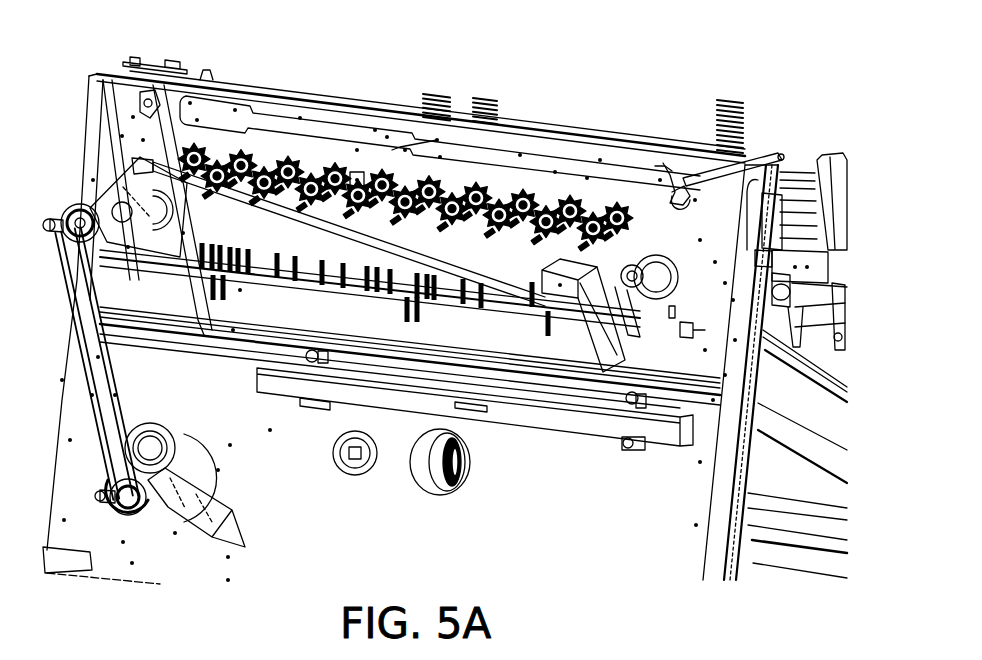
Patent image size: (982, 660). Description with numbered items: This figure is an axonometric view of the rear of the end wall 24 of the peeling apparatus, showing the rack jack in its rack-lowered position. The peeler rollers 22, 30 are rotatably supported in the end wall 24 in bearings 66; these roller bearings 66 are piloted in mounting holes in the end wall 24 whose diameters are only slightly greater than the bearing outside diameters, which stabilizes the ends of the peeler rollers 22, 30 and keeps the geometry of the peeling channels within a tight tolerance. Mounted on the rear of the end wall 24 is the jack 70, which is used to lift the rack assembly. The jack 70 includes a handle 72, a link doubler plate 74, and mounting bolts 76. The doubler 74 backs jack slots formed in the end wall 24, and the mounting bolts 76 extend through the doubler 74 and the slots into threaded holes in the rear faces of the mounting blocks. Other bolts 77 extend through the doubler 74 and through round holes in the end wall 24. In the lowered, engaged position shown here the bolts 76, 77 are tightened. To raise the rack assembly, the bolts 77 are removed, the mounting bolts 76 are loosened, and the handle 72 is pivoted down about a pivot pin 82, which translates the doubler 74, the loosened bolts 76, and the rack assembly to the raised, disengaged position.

The peeler roller 22 is at (532, 228).
The end wall 24 is at (692, 313).
The peeler roller 30 is at (468, 195).
The bearings 66 is at (357, 180).
The jack 70 is at (662, 163).
The handle 72 is at (752, 167).
The link doubler plate 74 is at (247, 110).
The mounting bolts 76 is at (437, 140).
The bolts 77 is at (190, 103).
The pivot pin 82 is at (677, 200).